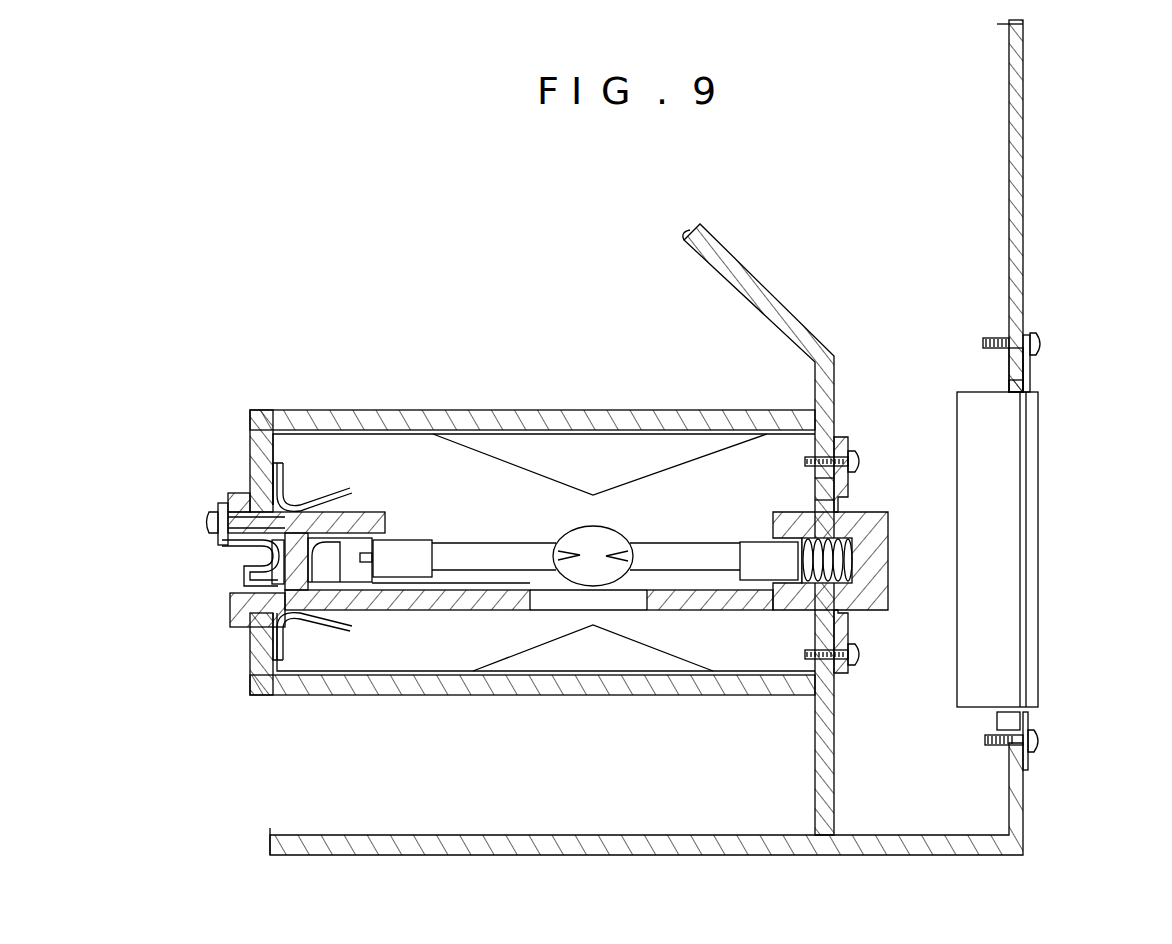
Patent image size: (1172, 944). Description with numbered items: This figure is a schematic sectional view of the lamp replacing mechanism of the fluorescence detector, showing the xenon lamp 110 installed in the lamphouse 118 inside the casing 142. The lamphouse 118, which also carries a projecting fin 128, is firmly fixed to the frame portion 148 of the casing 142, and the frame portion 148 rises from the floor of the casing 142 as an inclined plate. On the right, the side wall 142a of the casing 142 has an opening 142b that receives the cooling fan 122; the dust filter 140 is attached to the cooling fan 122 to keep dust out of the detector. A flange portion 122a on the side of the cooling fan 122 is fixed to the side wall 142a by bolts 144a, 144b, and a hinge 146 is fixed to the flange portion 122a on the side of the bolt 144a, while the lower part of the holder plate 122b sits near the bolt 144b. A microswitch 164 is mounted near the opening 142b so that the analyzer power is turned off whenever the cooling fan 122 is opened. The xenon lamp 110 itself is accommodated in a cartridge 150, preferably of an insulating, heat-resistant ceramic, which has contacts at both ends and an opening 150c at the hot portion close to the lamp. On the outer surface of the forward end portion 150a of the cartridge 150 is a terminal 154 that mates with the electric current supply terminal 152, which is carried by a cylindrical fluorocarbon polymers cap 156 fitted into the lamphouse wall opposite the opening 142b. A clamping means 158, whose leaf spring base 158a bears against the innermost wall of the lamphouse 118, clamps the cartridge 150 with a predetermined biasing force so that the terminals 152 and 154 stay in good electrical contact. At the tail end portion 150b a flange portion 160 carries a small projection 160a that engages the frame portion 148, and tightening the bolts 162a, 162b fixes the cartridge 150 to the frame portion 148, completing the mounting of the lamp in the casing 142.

The xenon lamp 110 is at (495, 527).
The lamphouse 118 is at (585, 688).
The cooling fan 122 is at (1015, 632).
The flange portion 122a is at (1030, 388).
The holder plate lower portion 122b is at (1035, 748).
The fin 128 is at (460, 446).
The dust filter 140 is at (1030, 595).
The casing 142 is at (595, 855).
The side wall 142a is at (1009, 98).
The opening 142b is at (1020, 405).
The bolt 144a is at (1042, 345).
The bolt 144b is at (1041, 740).
The hinge 146 is at (1033, 349).
The frame portion 148 is at (790, 262).
The cartridge 150 is at (413, 600).
The forward end portion 150a is at (250, 500).
The tail end portion 150b is at (888, 536).
The opening 150c is at (638, 610).
The electric current supply terminal 152 is at (235, 560).
The terminal 154 is at (232, 600).
The cylindrical fluorocarbon polymers cap 156 is at (218, 522).
The clamping means 158 is at (306, 500).
The leaf spring base 158a is at (345, 485).
The flange portion 160 is at (846, 437).
The small projection 160a is at (815, 489).
The bolt 162a is at (864, 462).
The bolt 162b is at (864, 655).
The microswitch 164 is at (997, 722).